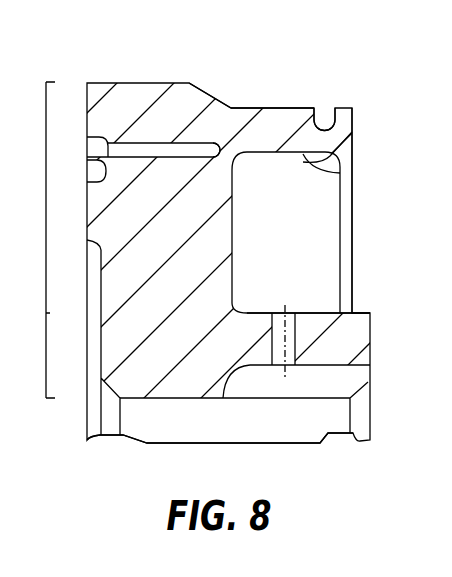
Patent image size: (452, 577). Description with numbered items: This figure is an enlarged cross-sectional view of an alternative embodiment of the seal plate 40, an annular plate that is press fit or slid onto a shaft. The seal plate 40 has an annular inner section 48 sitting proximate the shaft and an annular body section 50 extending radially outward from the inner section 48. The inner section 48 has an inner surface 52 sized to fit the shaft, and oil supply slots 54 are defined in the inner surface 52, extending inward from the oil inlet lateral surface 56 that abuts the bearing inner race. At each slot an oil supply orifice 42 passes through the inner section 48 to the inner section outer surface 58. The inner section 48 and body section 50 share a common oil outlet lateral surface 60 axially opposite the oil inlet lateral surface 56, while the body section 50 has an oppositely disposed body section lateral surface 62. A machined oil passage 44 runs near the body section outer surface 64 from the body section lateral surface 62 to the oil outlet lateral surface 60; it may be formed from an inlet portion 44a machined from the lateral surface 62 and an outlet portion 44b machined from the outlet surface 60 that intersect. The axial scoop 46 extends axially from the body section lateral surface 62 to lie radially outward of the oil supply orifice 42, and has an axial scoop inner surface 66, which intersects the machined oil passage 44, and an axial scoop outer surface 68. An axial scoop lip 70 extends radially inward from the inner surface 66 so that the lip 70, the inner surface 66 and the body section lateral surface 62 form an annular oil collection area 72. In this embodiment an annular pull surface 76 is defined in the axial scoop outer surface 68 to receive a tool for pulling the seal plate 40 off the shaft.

The seal plate 40 is at (379, 86).
The oil supply orifice 42 is at (300, 314).
The machined oil passage 44 is at (147, 141).
The inlet portion 44a is at (230, 147).
The outlet portion 44b is at (120, 148).
The axial scoop 46 is at (297, 127).
The inner section 48 is at (46, 355).
The body section 50 is at (46, 196).
The inner surface 52 is at (190, 399).
The oil supply slot 54 is at (352, 383).
The oil inlet lateral surface 56 is at (372, 340).
The inner section outer surface 58 is at (363, 311).
The oil outlet lateral surface 60 is at (87, 227).
The body section lateral surface 62 is at (234, 242).
The body section outer surface 64 is at (190, 83).
The axial scoop inner surface 66 is at (357, 147).
The axial scoop lip 70 is at (352, 173).
The oil collection area 72 is at (282, 165).
The annular pull surface 76 is at (326, 127).
The axial scoop outer surface 68 is at (261, 108).